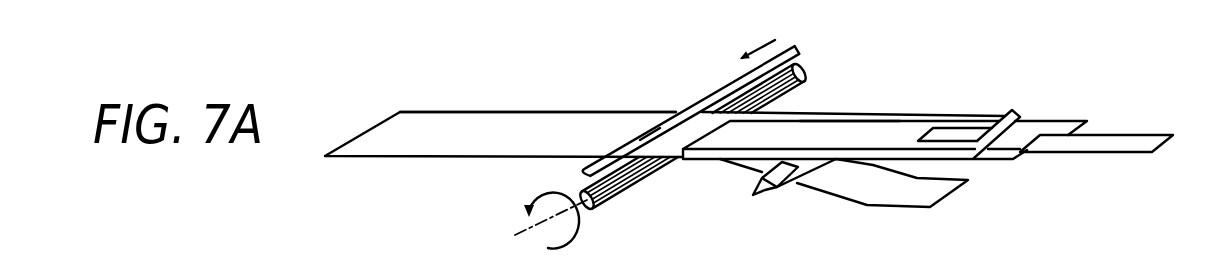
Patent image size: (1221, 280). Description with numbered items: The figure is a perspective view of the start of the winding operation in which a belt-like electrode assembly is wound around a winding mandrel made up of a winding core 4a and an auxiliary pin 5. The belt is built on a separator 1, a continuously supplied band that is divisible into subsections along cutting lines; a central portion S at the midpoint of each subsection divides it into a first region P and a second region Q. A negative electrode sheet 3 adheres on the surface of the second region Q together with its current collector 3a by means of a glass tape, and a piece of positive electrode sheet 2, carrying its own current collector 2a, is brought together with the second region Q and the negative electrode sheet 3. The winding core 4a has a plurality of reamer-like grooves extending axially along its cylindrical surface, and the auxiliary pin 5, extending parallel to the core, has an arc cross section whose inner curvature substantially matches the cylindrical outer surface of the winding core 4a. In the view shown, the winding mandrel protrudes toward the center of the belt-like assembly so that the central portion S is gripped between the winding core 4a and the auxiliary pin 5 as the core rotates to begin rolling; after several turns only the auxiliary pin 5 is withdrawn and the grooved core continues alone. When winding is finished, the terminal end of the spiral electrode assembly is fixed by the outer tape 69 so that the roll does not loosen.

The separator 1 is at (458, 112).
The first region P is at (553, 125).
The auxiliary pin 5 is at (692, 102).
The winding core 4a is at (628, 189).
The central portion S is at (667, 137).
The negative electrode sheet 3 is at (885, 130).
The second region Q is at (845, 120).
The current collector 3a is at (1010, 114).
The outer tape 69 is at (1138, 140).
The positive electrode sheet 2 is at (880, 207).
The current collector 2a is at (773, 193).